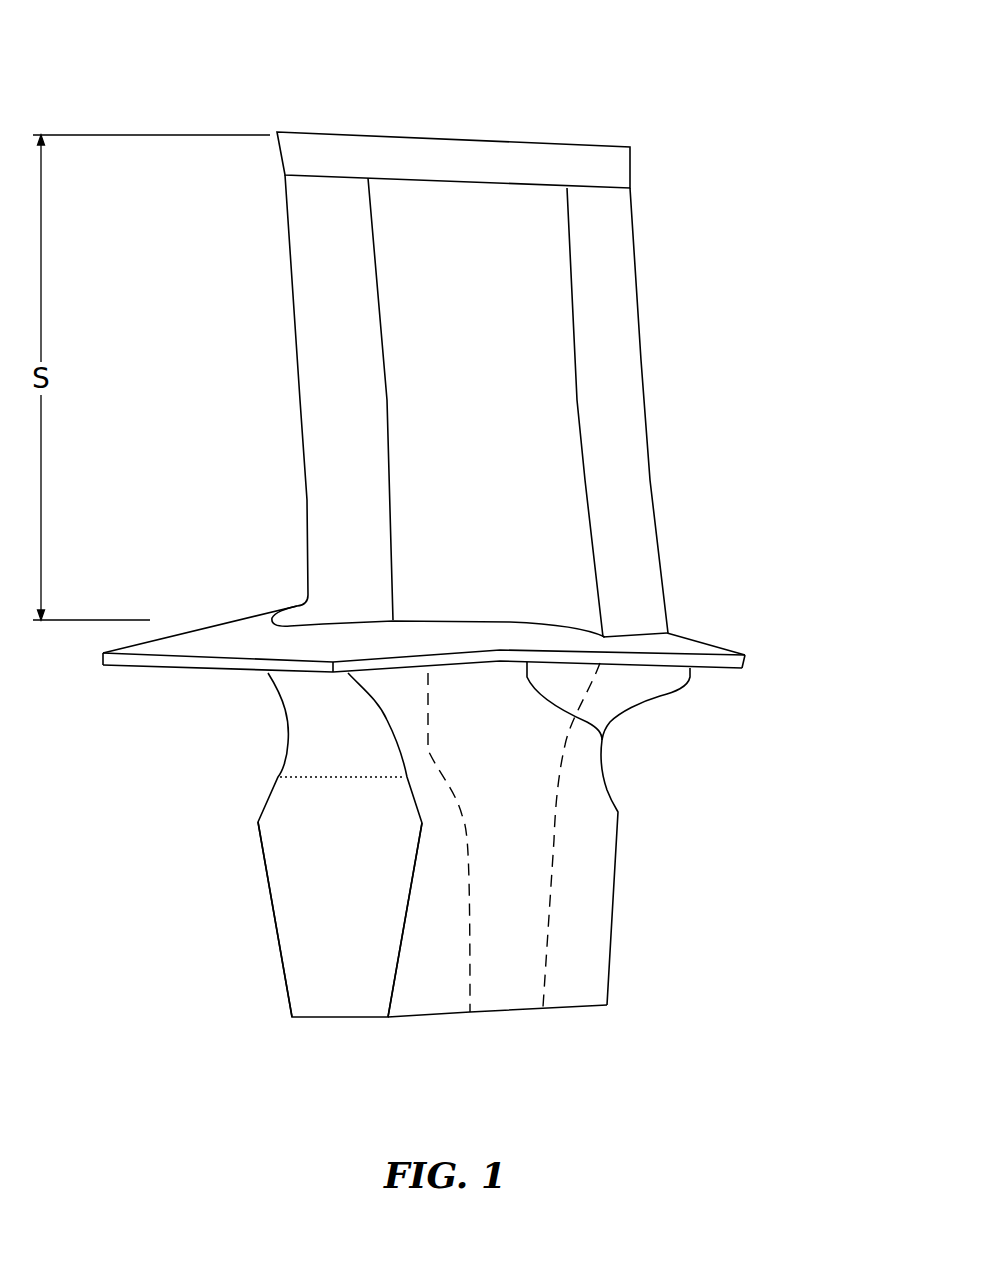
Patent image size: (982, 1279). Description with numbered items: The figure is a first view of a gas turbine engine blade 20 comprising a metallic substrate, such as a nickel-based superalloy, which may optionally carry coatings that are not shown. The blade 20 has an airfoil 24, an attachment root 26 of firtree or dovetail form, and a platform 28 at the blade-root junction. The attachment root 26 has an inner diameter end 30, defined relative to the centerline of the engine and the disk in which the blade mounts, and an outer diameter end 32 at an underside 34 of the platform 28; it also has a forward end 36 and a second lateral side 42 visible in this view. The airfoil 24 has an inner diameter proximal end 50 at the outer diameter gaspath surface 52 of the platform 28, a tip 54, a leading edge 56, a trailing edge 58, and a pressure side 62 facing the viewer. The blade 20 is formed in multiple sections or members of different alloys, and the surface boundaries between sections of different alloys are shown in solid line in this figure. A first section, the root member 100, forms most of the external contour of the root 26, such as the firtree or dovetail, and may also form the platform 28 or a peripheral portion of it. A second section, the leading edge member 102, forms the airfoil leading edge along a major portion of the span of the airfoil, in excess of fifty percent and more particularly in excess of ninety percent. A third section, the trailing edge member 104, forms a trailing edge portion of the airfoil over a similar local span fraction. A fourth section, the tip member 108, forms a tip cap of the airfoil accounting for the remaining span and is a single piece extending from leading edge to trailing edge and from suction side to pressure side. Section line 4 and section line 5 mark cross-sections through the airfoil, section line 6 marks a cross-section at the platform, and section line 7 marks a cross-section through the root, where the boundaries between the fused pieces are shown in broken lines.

The blade 20 is at (160, 102).
The airfoil 24 is at (428, 406).
The attachment root 26 is at (437, 888).
The platform 28 is at (472, 604).
The inner diameter end 30 is at (432, 1017).
The outer diameter end 32 is at (580, 673).
The underside 34 is at (583, 682).
The forward end 36 is at (303, 903).
The second lateral side 42 is at (508, 935).
The inner diameter proximal end 50 is at (560, 611).
The outer diameter gaspath surface 52 is at (217, 630).
The tip 54 is at (502, 140).
The leading edge 56 is at (307, 328).
The trailing edge 58 is at (642, 385).
The pressure side 62 is at (528, 358).
The root member 100 is at (300, 980).
The leading edge member 102 is at (322, 298).
The trailing edge member 104 is at (634, 307).
The tip member 108 is at (427, 155).
The section line 4- 4 is at (267, 208).
The section line 5- 5 is at (290, 420).
The section line 6- 6 is at (83, 658).
The section line 7- 7 is at (250, 820).